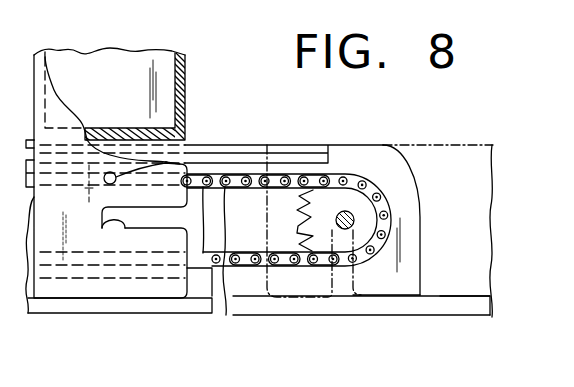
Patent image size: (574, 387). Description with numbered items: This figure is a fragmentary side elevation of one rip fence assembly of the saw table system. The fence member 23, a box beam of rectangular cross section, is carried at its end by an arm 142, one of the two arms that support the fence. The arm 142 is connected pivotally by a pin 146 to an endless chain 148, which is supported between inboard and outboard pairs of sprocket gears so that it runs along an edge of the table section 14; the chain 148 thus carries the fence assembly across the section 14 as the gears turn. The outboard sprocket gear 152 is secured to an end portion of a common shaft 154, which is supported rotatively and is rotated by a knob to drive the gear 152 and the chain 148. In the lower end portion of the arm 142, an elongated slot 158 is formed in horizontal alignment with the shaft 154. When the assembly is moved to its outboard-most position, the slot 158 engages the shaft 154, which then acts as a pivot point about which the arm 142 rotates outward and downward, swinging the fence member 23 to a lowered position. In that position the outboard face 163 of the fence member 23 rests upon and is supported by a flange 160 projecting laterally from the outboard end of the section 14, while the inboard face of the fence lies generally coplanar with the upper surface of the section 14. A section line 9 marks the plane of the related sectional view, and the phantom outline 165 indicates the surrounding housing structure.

The section line 9- 9 is at (80, 97).
The section 14 is at (212, 144).
The fence member 23 is at (113, 52).
The arm 142 is at (78, 212).
The pin 146 is at (116, 176).
The endless chain 148 is at (280, 176).
The outboard sprocket gear 152 is at (297, 217).
The shaft 154 is at (344, 211).
The elongated slot 158 is at (102, 236).
The flange 160 is at (432, 316).
The outboard face 163 is at (473, 297).
The housing cover 165 is at (437, 143).